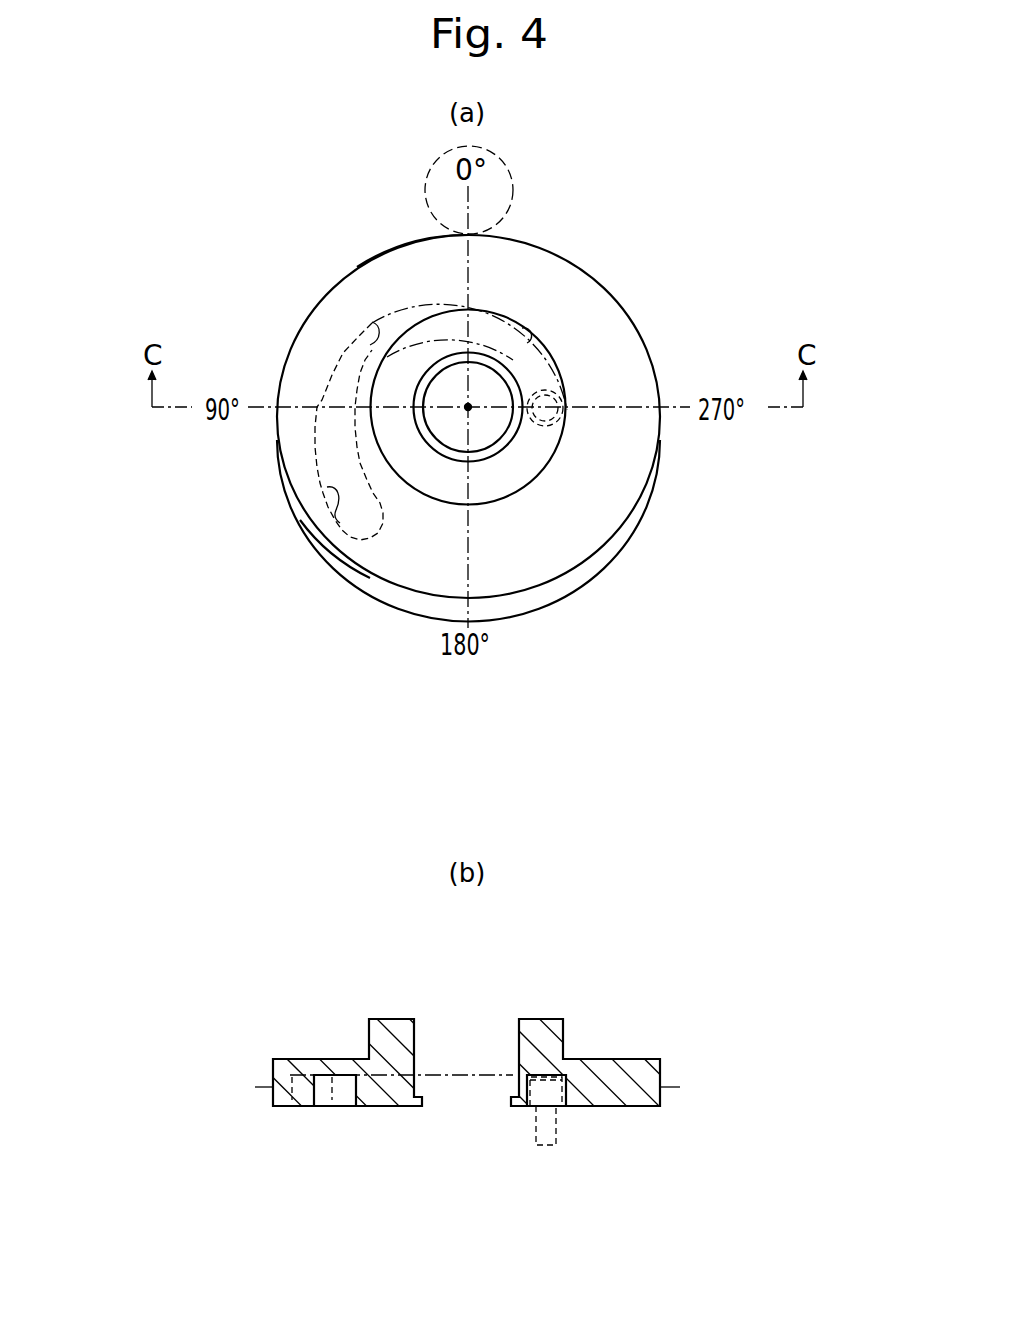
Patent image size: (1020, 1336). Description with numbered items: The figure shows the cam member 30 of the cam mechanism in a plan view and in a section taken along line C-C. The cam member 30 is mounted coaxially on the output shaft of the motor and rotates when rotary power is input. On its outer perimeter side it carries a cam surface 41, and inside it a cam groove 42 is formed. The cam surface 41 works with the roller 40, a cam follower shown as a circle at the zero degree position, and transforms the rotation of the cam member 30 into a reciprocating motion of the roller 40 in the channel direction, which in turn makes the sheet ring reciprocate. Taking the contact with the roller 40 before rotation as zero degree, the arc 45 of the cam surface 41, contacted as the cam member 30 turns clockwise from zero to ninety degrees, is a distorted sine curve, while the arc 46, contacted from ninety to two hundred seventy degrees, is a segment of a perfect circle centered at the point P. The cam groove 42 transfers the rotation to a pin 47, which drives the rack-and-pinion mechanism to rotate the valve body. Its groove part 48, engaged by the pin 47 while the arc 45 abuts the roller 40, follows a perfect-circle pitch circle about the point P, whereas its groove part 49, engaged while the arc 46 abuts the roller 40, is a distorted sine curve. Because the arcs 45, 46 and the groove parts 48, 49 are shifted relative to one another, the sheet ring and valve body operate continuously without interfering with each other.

The cam member 30 is at (600, 527).
The roller 40 is at (512, 183).
The cam surface 41 is at (643, 495).
The cam groove 42 is at (327, 488).
The arc 45 is at (357, 267).
The arc 46 is at (370, 578).
The pin 47 is at (555, 413).
The groove part 48 is at (537, 337).
The groove part 49 is at (365, 343).
The point P is at (468, 407).